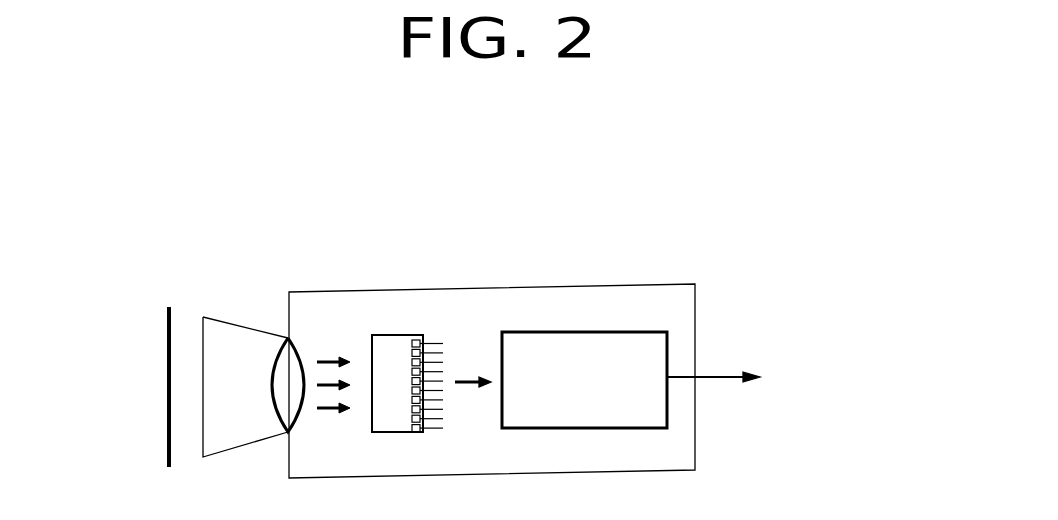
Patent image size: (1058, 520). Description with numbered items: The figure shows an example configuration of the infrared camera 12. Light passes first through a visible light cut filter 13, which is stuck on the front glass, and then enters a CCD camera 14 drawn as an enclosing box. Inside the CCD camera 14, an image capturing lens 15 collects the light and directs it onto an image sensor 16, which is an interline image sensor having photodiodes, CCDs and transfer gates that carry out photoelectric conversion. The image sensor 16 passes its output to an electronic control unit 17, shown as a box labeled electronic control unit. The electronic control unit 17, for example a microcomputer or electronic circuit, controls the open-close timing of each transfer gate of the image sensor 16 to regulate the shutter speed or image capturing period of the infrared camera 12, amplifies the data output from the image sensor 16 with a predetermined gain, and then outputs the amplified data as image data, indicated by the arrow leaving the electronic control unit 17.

The infrared camera 12 is at (110, 137).
The visible light cut filter 13 is at (167, 368).
The CCD camera 14 is at (457, 199).
The image capturing lens 15 is at (291, 368).
The image sensor 16 is at (400, 335).
The electronic control unit 17 is at (588, 332).